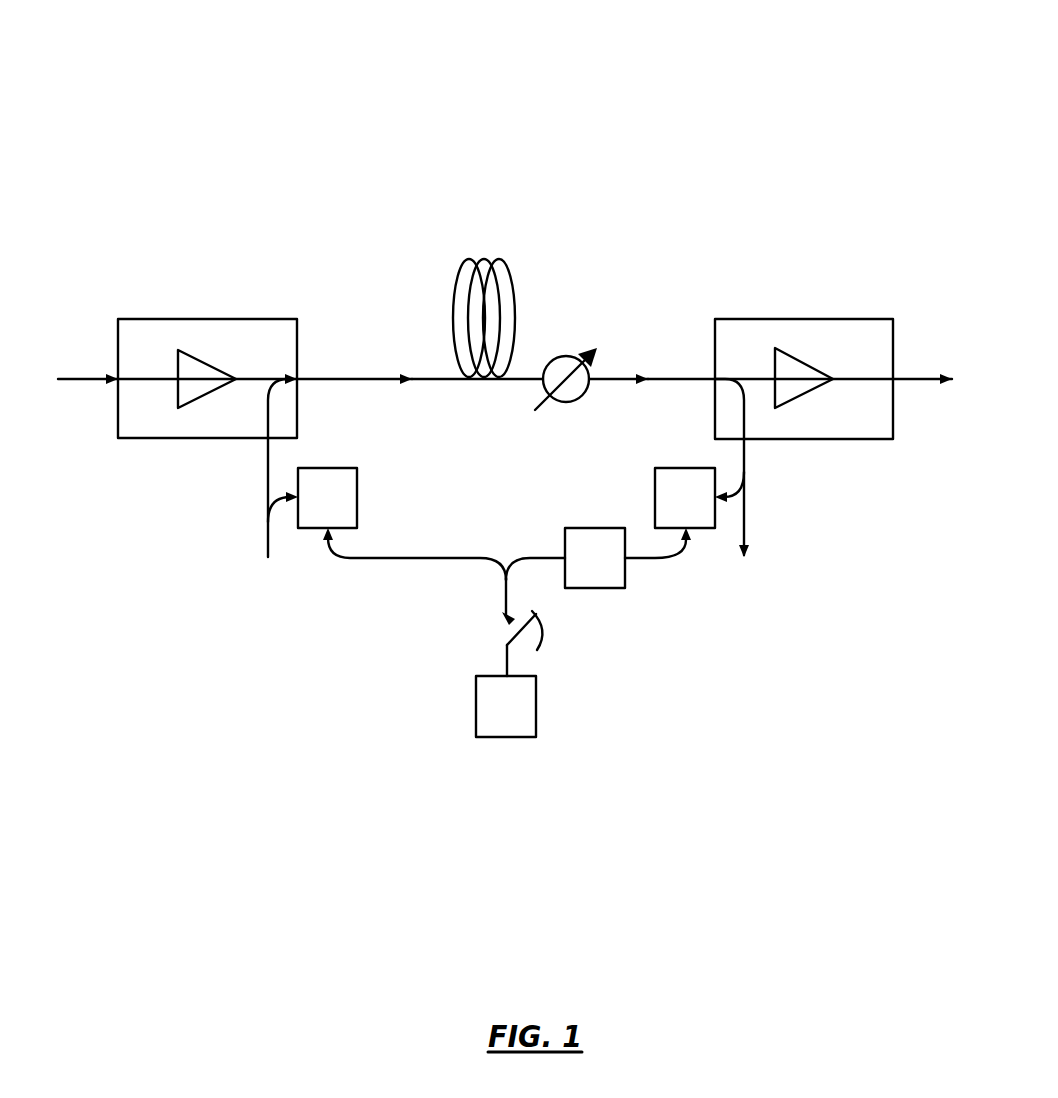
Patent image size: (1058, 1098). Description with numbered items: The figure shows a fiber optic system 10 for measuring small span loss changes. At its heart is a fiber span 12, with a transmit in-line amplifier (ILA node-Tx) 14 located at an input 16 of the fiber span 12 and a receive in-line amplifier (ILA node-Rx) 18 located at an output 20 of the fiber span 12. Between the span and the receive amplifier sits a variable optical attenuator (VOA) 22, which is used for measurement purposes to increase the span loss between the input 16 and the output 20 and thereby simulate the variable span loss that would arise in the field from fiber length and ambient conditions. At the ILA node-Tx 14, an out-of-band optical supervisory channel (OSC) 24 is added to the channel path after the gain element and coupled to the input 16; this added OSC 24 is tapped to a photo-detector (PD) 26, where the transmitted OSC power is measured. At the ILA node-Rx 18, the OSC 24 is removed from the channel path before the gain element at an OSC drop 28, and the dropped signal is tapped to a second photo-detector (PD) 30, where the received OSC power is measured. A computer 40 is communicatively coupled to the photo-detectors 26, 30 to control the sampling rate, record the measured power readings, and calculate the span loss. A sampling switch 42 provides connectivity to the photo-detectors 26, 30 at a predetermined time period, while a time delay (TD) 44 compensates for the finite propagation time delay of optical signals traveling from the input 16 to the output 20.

The fiber optic system 10 is at (624, 70).
The fiber span 12 is at (513, 280).
The transmit in-line amplifier (ILA node-Tx) 14 is at (263, 319).
The input 16 is at (320, 379).
The receive in-line amplifier (ILA node-Rx) 18 is at (865, 319).
The output 20 is at (662, 379).
The variable optical attenuator (VOA) 22 is at (562, 401).
The optical supervisory channel (OSC) 24 is at (262, 478).
The photo-detector (PD) 26 is at (340, 468).
The OSC drop 28 is at (745, 518).
The photo-detector (PD) 30 is at (660, 468).
The computer 40 is at (476, 707).
The sampling switch 42 is at (485, 622).
The time delay (TD) 44 is at (565, 540).